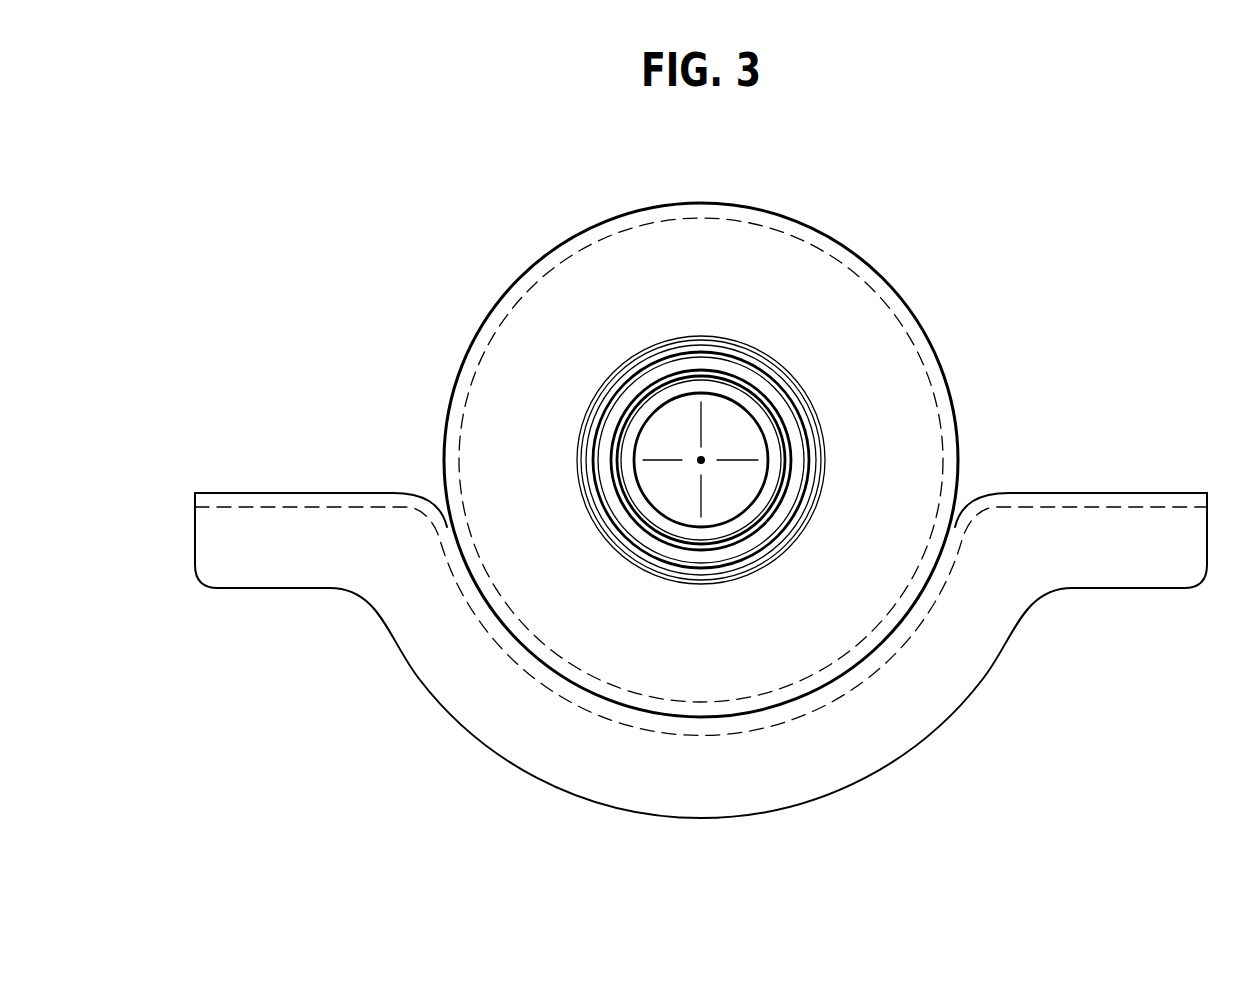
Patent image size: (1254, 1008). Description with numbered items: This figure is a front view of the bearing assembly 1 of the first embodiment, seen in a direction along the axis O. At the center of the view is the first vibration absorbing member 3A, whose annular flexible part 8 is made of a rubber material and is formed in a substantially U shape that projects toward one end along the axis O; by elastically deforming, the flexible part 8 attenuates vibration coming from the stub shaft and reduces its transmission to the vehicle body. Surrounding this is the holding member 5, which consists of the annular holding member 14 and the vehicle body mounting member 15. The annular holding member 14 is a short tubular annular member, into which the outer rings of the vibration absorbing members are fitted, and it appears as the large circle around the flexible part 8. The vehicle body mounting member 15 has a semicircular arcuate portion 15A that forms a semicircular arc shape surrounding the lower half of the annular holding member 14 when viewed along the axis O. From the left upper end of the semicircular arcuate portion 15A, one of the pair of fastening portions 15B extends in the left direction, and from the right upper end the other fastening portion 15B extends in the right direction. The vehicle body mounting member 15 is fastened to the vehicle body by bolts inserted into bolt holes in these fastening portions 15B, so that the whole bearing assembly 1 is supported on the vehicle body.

The bearing assembly 1 is at (300, 276).
The first vibration absorbing member 3A is at (475, 282).
The holding member 5 is at (827, 233).
The annular holding member 14 is at (701, 439).
The flexible part 8 is at (500, 372).
The axis O is at (705, 457).
The vehicle body mounting member 15 is at (420, 681).
The semicircular arcuate portion 15A is at (590, 785).
The fastening portion 15B is at (300, 522).